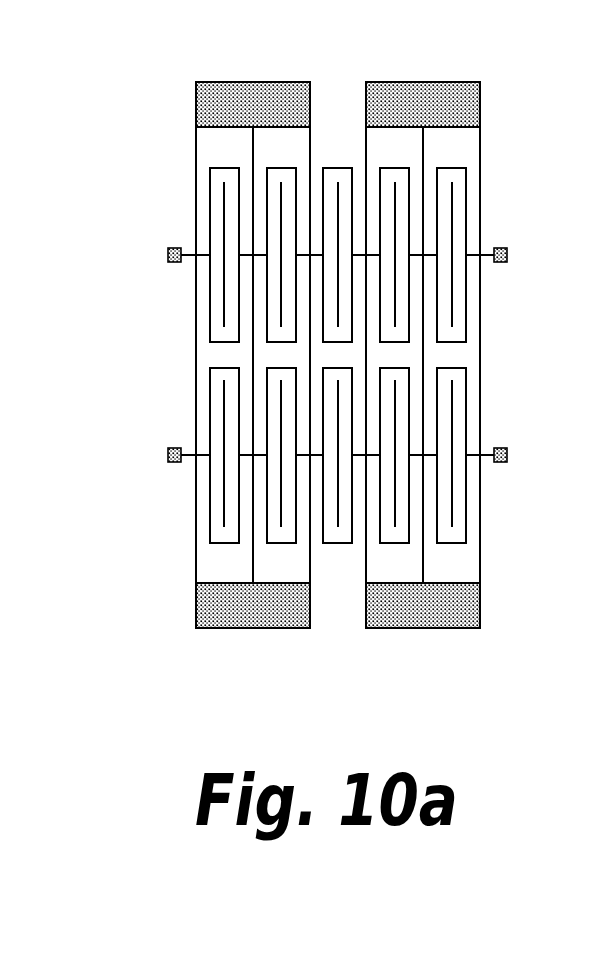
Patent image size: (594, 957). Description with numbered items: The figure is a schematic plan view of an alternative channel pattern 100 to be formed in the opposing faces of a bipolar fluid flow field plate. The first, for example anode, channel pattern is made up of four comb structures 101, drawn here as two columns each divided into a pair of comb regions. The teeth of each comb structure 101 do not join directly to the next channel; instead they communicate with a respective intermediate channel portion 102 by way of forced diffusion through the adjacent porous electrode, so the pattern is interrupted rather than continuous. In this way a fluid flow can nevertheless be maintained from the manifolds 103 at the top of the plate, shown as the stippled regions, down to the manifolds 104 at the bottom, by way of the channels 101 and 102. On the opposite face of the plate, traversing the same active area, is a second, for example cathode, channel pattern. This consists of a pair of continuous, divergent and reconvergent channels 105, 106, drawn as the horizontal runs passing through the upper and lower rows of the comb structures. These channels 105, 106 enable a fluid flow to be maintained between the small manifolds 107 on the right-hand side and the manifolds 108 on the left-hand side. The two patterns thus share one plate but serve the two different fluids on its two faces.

The channel pattern 100 is at (318, 344).
The comb structure 101 is at (195, 147).
The intermediate channel portion 102 is at (195, 353).
The manifold 103 is at (238, 82).
The manifold 104 is at (238, 628).
The continuous divergent and reconvergent channel 105 is at (468, 205).
The continuous divergent and reconvergent channel 106 is at (470, 392).
The manifold 107 is at (498, 247).
The manifold 108 is at (168, 248).